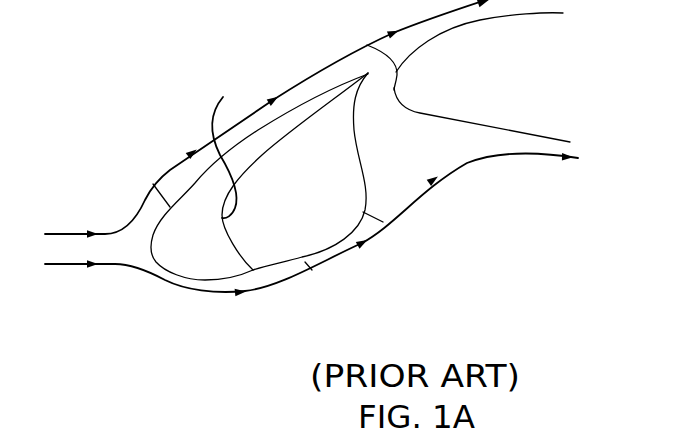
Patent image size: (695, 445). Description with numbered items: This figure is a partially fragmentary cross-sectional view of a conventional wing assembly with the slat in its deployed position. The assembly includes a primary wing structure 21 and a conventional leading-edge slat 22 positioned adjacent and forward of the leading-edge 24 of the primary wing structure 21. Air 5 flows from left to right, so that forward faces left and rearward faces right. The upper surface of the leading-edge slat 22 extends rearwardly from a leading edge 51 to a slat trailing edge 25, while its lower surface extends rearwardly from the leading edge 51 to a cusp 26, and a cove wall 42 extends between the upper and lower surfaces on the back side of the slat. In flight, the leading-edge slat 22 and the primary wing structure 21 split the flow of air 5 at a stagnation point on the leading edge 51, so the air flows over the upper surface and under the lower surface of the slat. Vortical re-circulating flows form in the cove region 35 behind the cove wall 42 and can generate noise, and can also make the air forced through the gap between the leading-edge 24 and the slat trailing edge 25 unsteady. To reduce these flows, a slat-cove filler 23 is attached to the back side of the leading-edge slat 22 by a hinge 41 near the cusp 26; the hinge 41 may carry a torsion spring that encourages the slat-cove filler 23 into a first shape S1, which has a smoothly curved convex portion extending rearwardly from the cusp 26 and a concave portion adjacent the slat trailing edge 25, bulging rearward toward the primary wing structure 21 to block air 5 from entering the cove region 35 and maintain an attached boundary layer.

The air 5 is at (75, 273).
The primary wing structure 21 is at (477, 124).
The leading-edge slat 22 is at (153, 184).
The slat-cove filler 23 is at (383, 222).
The leading-edge 24 is at (367, 45).
The slat trailing edge 25 is at (364, 73).
The cusp 26 is at (278, 263).
The cove region 35 is at (326, 173).
The hinge 41 is at (253, 270).
The cove wall 42 is at (230, 145).
The leading edge 51 is at (155, 253).
The first shape S1 is at (312, 270).